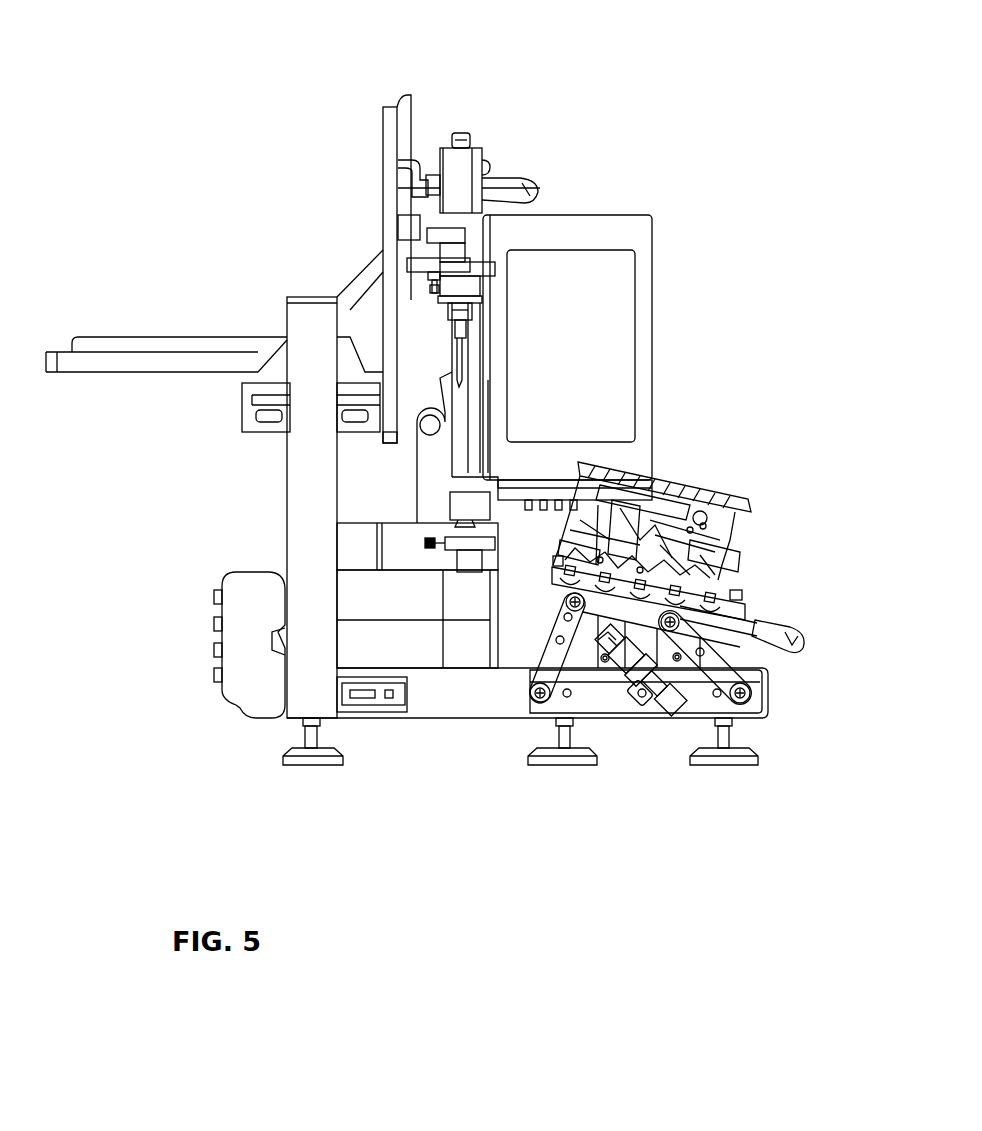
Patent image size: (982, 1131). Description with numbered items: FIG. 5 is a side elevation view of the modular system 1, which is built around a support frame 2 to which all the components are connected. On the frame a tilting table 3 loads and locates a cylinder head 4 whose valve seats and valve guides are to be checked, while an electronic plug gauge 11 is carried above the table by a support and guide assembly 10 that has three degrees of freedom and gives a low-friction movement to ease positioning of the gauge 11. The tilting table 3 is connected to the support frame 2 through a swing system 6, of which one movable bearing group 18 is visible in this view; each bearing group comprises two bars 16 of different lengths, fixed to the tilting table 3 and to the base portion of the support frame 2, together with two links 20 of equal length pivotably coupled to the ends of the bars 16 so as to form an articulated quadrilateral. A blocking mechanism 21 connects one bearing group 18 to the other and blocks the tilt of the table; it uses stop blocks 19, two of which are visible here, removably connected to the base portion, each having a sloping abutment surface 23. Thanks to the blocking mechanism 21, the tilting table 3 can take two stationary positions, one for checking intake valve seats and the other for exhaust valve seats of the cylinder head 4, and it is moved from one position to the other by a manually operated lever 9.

The modular system 1 is at (183, 143).
The support frame 2 is at (307, 489).
The tilting table 3 is at (752, 607).
The cylinder head 4 is at (676, 493).
The swing system 6 is at (745, 712).
The manually operated lever 9 is at (797, 630).
The support and guide assembly 10 is at (421, 118).
The electronic gauge 11 is at (467, 157).
The bars 16 is at (613, 697).
The movable bearing group 18 is at (722, 648).
The stop blocks 19 is at (597, 660).
The links 20 is at (733, 668).
The blocking mechanism 21 is at (667, 700).
The abutment surface 23 is at (592, 648).